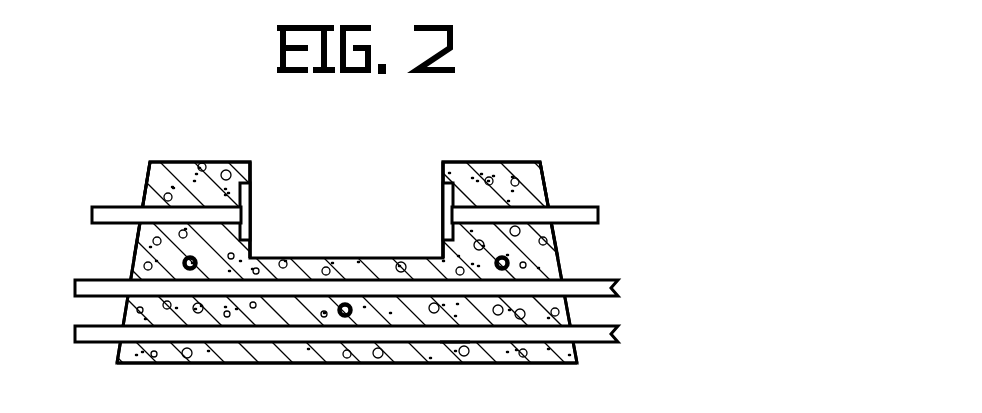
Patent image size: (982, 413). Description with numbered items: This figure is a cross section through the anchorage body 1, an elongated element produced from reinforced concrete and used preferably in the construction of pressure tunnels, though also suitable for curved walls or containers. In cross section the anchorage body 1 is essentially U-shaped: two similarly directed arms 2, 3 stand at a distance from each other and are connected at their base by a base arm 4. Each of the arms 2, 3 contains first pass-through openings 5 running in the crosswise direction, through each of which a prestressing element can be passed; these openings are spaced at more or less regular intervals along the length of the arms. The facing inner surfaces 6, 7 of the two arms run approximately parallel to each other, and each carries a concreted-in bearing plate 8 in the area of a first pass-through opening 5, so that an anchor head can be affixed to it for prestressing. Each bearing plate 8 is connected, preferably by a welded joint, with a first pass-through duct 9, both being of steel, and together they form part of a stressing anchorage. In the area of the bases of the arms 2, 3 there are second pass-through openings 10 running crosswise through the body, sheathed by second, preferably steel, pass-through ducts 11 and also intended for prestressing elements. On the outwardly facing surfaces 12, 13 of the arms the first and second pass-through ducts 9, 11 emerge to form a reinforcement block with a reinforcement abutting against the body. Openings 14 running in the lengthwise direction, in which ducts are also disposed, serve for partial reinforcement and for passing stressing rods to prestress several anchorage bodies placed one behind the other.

The anchorage body 1 is at (386, 366).
The arm 2 is at (205, 163).
The arm 3 is at (464, 162).
The base arm 4 is at (262, 346).
The first pass-through opening 5 is at (177, 211).
The inner surface 6 is at (252, 256).
The inner surface 7 is at (441, 256).
The bearing plate 8 is at (247, 198).
The first pass-through duct 9 is at (115, 207).
The second pass-through opening 10 is at (462, 328).
The second pass-through duct 11 is at (620, 333).
The outwardly facing surface 12 is at (132, 257).
The outwardly facing surface 13 is at (557, 252).
The lengthwise opening 14 is at (190, 271).